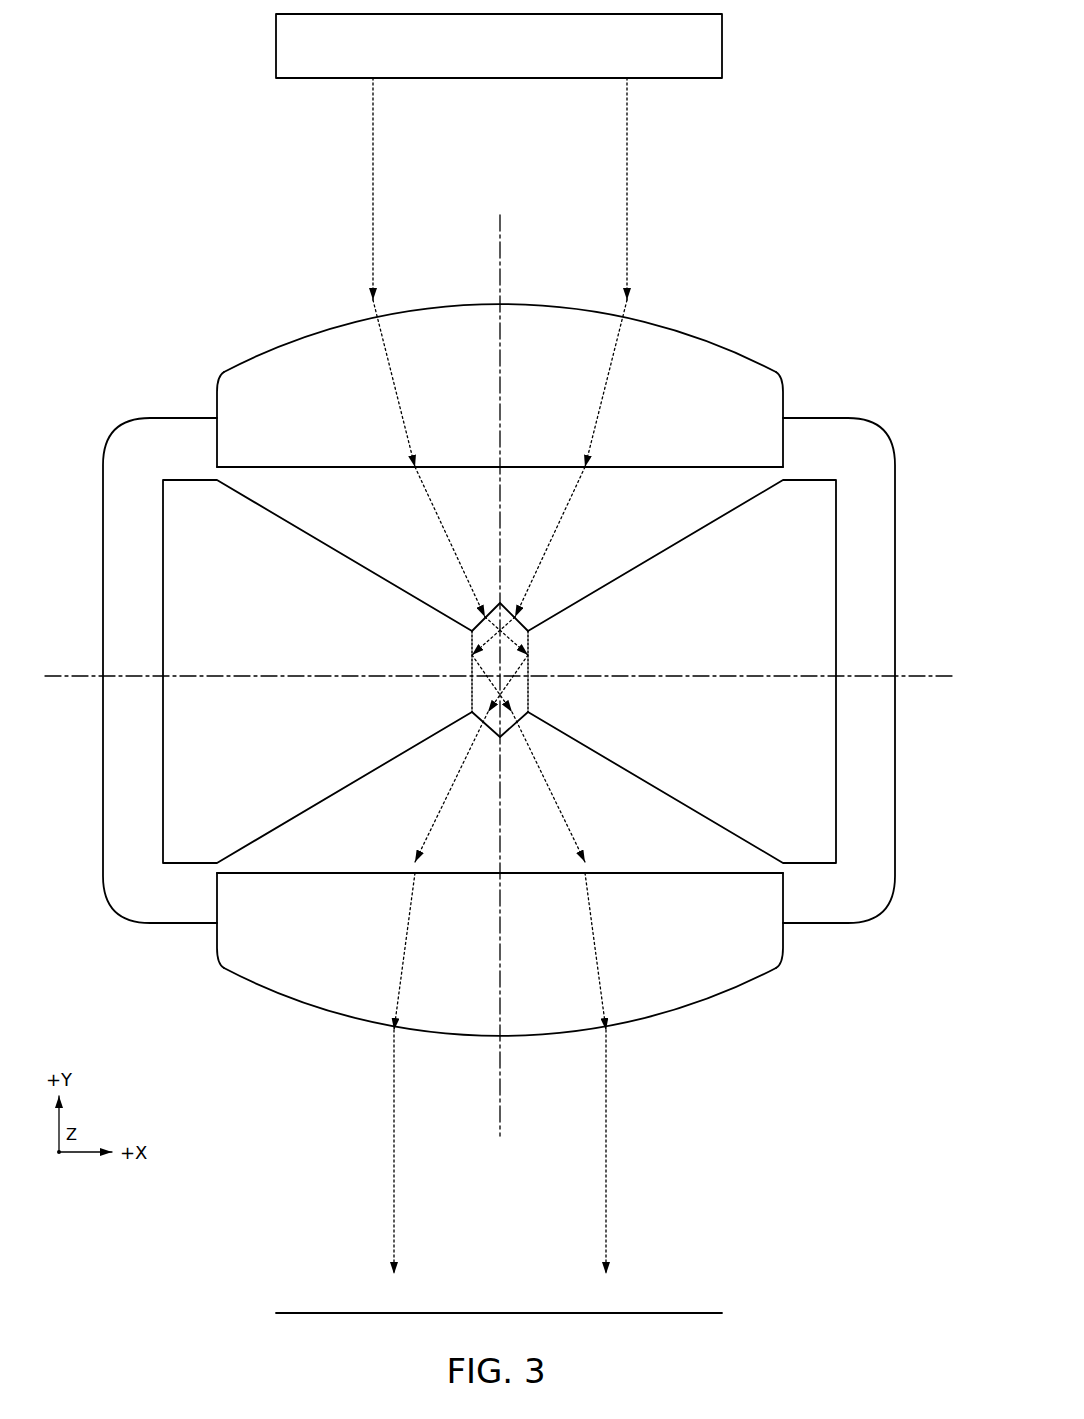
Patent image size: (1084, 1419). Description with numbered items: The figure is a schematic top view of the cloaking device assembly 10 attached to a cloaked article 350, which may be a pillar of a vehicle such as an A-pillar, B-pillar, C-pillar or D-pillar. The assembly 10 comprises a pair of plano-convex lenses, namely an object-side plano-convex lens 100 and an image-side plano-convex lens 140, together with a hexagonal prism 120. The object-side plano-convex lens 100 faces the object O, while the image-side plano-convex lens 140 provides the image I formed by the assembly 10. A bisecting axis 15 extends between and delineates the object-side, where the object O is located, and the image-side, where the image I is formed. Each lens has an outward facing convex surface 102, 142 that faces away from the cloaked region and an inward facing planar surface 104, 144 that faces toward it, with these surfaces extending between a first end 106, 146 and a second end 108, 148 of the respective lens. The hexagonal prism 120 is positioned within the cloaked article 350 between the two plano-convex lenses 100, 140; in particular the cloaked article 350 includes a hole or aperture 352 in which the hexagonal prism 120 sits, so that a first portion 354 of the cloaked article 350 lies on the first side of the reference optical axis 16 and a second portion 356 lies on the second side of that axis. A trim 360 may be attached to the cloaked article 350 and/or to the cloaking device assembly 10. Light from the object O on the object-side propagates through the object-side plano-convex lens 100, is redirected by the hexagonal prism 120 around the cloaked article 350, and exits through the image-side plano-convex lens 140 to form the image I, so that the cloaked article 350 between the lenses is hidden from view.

The cloaking device assembly 10 is at (825, 214).
The bisecting axis 15 is at (915, 676).
The reference optical axis 16 is at (500, 224).
The object-side plano-convex lens 100 is at (499, 393).
The outward facing convex surface 102 is at (656, 313).
The inward facing planar surface 104 is at (656, 470).
The first end 106 is at (784, 381).
The second end 108 is at (217, 385).
The hexagonal prism 120 is at (557, 634).
The image-side plano-convex lens 140 is at (499, 951).
The outward facing convex surface 142 is at (705, 1015).
The inward facing planar surface 144 is at (628, 873).
The first end 146 is at (785, 943).
The second end 148 is at (215, 947).
The cloaked article 350 is at (561, 671).
The aperture 352 is at (527, 616).
The first portion 354 is at (694, 655).
The second portion 356 is at (224, 655).
The trim 360 is at (888, 426).
The object O is at (490, 60).
The image I is at (683, 1313).